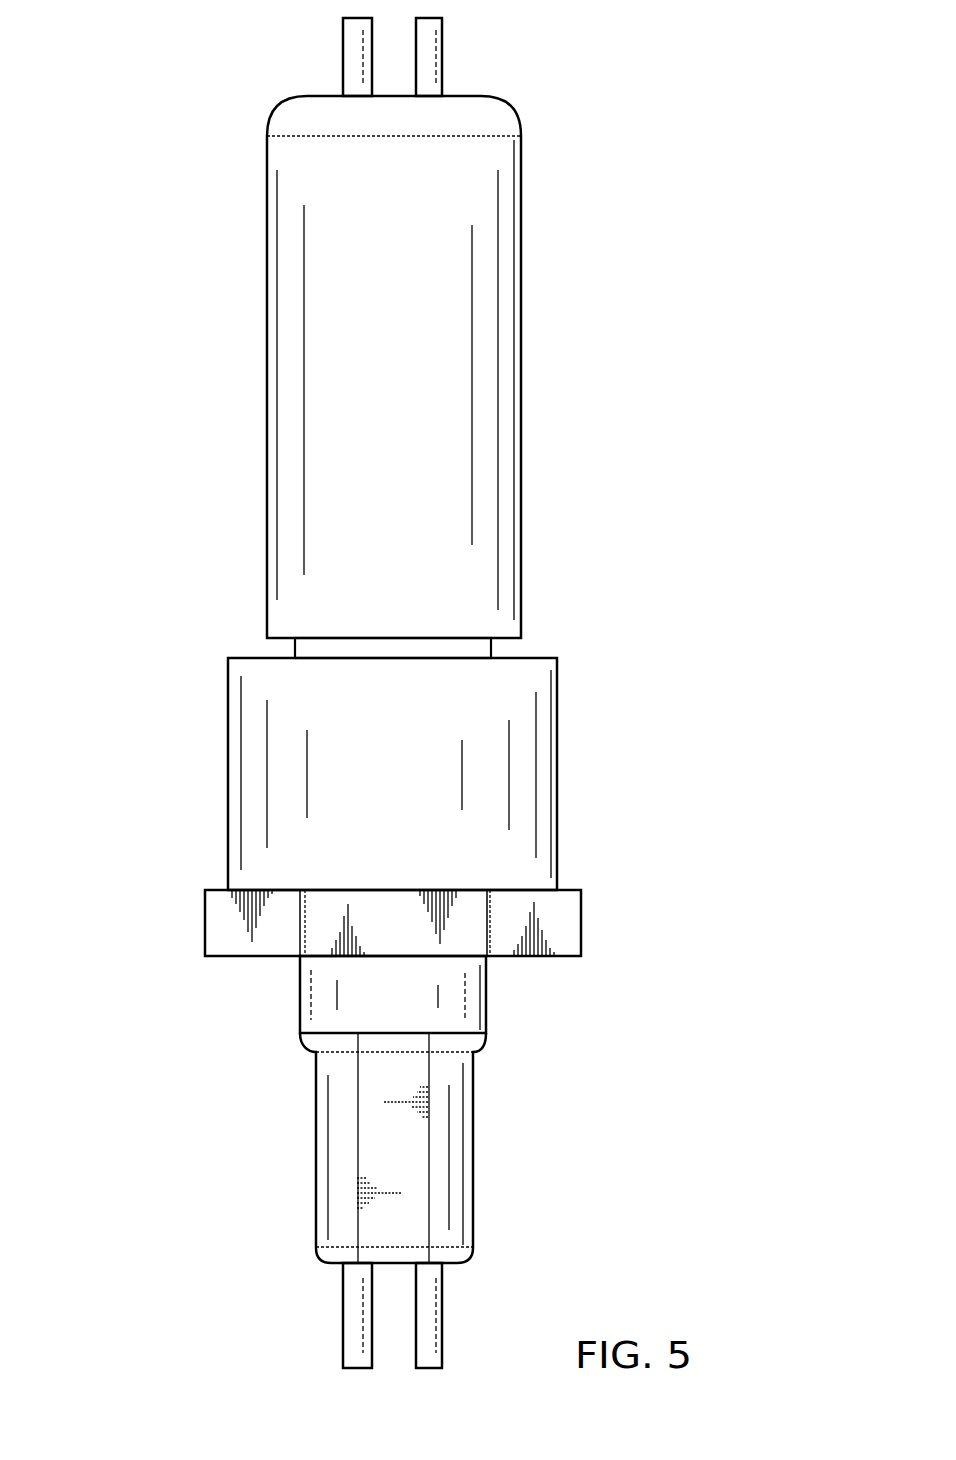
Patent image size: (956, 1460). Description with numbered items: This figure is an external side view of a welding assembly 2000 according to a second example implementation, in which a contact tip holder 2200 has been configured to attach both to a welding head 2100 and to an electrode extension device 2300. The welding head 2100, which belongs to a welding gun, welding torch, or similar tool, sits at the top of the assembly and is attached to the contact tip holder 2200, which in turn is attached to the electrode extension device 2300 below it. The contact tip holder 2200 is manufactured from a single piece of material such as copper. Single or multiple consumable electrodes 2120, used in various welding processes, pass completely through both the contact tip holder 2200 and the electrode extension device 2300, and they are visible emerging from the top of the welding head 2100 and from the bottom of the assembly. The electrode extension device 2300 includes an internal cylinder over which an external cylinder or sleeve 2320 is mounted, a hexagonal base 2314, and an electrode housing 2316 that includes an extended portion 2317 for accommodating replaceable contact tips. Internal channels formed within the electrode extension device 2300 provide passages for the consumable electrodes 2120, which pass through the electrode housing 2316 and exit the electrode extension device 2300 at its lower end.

The welding assembly 2000 is at (115, 198).
The consumable electrodes 2120 is at (343, 61).
The welding head 2100 is at (523, 366).
The contact tip holder 2200 is at (494, 649).
The electrode extension device 2300 is at (226, 772).
The external cylinder or sleeve 2320 is at (425, 788).
The hexagonal base 2314 is at (581, 920).
The extended portion 2317 is at (480, 995).
The electrode housing 2316 is at (473, 1150).